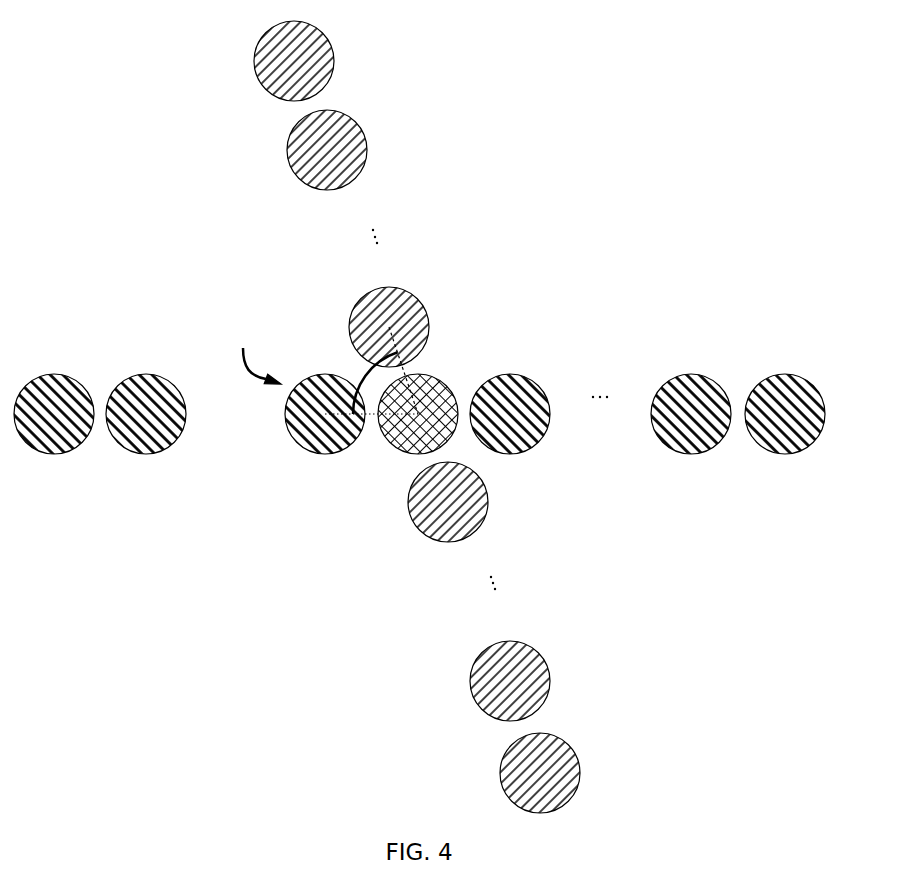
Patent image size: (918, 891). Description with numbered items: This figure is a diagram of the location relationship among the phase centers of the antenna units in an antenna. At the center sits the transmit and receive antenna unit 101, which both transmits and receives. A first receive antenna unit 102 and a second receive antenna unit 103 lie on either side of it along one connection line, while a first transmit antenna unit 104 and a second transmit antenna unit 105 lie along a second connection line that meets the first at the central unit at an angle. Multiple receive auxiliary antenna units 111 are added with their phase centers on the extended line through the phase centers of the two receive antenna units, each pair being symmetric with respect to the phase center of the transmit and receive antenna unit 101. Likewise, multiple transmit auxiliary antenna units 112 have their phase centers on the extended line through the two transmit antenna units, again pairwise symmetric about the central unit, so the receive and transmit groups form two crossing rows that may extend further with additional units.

The transmit and receive antenna unit 101 is at (446, 386).
The first receive antenna unit 102 is at (322, 376).
The second receive antenna unit 103 is at (513, 453).
The first transmit antenna unit 104 is at (403, 290).
The second transmit antenna unit 105 is at (420, 530).
The receive auxiliary antenna units 111 is at (45, 462).
The transmit auxiliary antenna units 112 is at (390, 417).